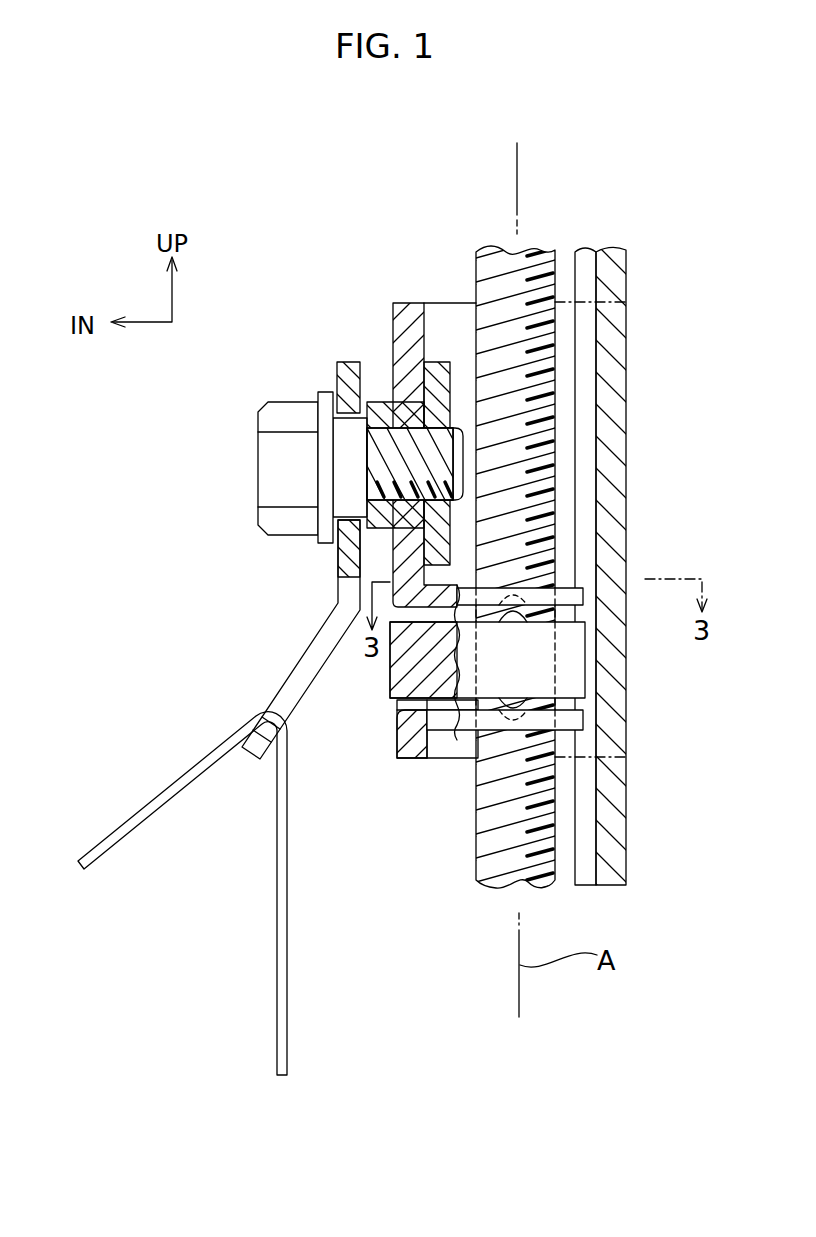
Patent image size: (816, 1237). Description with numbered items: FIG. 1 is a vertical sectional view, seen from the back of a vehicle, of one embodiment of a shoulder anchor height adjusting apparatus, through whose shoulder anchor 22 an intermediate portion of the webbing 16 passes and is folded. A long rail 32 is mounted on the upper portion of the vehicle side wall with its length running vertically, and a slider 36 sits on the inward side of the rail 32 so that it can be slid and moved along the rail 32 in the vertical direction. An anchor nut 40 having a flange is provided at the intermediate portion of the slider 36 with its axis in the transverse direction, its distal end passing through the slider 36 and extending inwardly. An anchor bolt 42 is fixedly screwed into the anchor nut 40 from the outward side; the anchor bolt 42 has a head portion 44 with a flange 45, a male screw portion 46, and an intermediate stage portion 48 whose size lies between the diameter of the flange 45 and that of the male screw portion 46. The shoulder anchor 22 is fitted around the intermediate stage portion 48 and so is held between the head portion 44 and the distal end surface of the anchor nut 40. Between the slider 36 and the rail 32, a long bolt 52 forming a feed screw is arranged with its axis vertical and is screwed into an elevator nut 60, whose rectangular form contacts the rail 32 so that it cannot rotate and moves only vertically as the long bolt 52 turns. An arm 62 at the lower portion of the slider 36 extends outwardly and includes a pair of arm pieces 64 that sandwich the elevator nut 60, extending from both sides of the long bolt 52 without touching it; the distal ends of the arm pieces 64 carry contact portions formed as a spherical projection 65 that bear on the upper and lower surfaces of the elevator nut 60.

The webbing 16 is at (287, 945).
The shoulder anchor 22 is at (308, 673).
The rail 32 is at (638, 424).
The slider 36 is at (422, 291).
The anchor nut 40 is at (447, 350).
The anchor bolt 42 is at (280, 442).
The head portion 44 is at (293, 412).
The flange 45 is at (340, 410).
The male screw portion 46 is at (397, 440).
The intermediate stage portion 48 is at (347, 490).
The long bolt 52 is at (491, 865).
The elevator nut 60 is at (472, 675).
The arm 62 is at (599, 602).
The arm pieces 64 is at (572, 720).
The spherical projection 65 is at (522, 698).